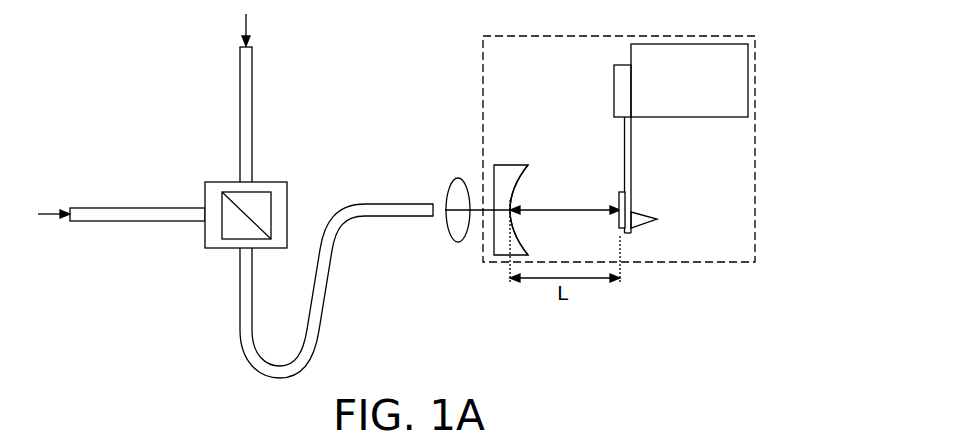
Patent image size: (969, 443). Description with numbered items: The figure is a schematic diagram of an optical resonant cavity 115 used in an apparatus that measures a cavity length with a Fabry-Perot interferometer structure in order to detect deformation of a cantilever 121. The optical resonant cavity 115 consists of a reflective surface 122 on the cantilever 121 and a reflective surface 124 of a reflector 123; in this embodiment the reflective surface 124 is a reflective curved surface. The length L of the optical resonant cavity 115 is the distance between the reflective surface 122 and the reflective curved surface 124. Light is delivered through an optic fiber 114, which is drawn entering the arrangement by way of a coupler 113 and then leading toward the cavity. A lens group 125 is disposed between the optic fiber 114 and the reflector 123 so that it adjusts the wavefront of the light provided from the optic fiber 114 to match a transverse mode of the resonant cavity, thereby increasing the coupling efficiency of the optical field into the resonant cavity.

The optical coupler 113 is at (205, 240).
The optic fiber 114 is at (253, 134).
The optical resonant cavity 115 is at (483, 90).
The cantilever 121 is at (632, 135).
The reflective surface 122 is at (619, 192).
The reflector 123 is at (511, 164).
The reflective curved surface 124 is at (520, 182).
The lens group 125 is at (456, 172).